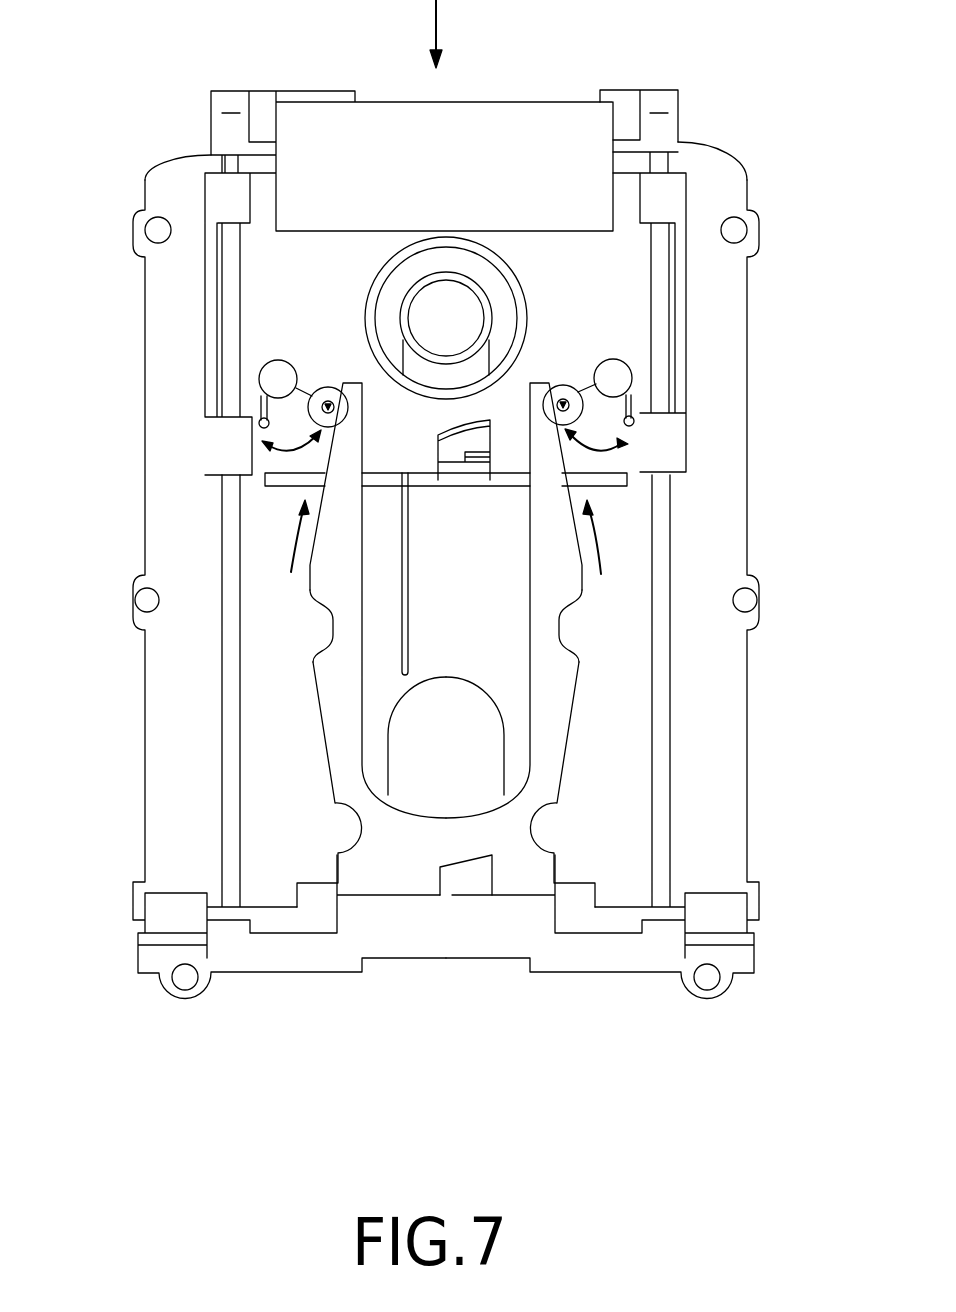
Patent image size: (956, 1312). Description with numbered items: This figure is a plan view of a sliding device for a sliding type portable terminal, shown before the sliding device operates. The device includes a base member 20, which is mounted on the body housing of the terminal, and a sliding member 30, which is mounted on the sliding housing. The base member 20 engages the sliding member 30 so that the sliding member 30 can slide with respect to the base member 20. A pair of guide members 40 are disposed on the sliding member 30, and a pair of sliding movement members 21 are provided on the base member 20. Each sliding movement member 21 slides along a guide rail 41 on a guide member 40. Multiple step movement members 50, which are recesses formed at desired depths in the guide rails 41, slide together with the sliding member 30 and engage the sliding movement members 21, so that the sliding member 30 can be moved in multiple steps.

The base member 20 is at (188, 350).
The sliding movement member 21 is at (277, 385).
The sliding member 30 is at (760, 527).
The guide member 40 is at (426, 748).
The guide rail 41 is at (318, 723).
The multiple step movement member 50 is at (331, 628).